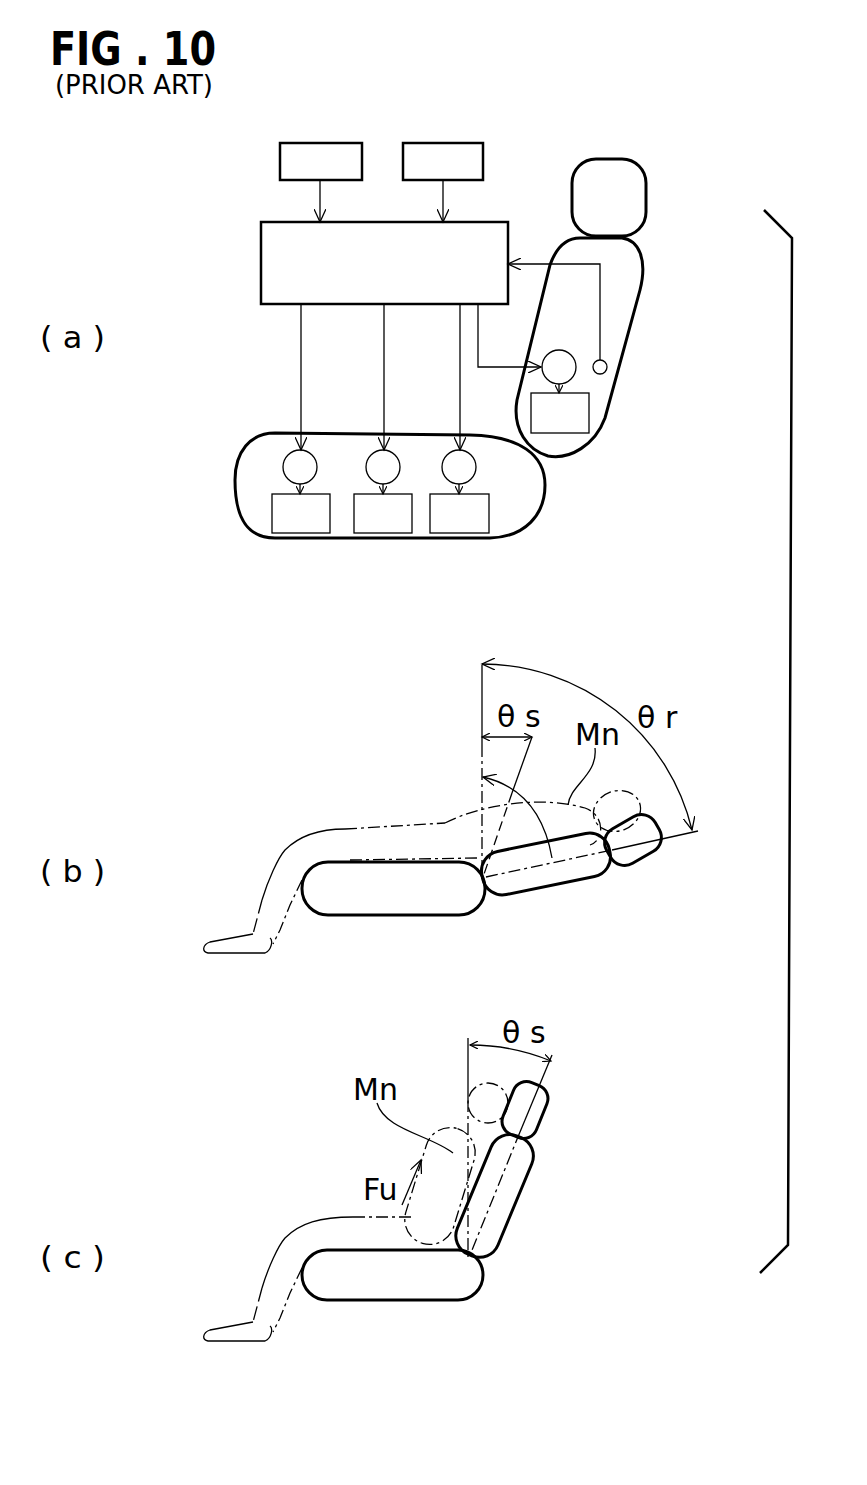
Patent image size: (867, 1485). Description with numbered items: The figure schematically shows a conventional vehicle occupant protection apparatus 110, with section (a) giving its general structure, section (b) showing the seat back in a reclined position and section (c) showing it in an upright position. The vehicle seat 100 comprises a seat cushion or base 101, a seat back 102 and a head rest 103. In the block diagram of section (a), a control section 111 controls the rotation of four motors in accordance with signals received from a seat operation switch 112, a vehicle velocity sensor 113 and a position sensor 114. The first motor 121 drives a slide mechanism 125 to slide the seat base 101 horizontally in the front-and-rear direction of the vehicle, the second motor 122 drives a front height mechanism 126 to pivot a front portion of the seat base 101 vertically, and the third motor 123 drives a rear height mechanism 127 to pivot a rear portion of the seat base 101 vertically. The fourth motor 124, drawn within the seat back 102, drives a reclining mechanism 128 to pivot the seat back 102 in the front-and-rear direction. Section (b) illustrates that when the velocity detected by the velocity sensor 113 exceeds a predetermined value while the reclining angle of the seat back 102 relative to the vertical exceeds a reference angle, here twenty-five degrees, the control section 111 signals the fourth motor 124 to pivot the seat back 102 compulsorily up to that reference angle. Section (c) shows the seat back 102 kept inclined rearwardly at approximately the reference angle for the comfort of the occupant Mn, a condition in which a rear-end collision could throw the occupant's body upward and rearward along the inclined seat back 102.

The vehicle seat 100 is at (501, 540).
The seat cushion or base 101 is at (522, 512).
The seat back 102 is at (562, 447).
The head rest 103 is at (628, 186).
The vehicle occupant protection apparatus 110 is at (186, 203).
The control section 111 is at (261, 263).
The seat operation switch 112 is at (321, 143).
The vehicle velocity sensor 113 is at (445, 143).
The position sensor 114 is at (608, 370).
The first motor 121 is at (289, 453).
The second motor 122 is at (372, 453).
The third motor 123 is at (448, 453).
The fourth motor 124 is at (578, 375).
The slide mechanism 125 is at (300, 527).
The front height mechanism 126 is at (383, 527).
The rear height mechanism 127 is at (458, 527).
The reclining mechanism 128 is at (577, 417).